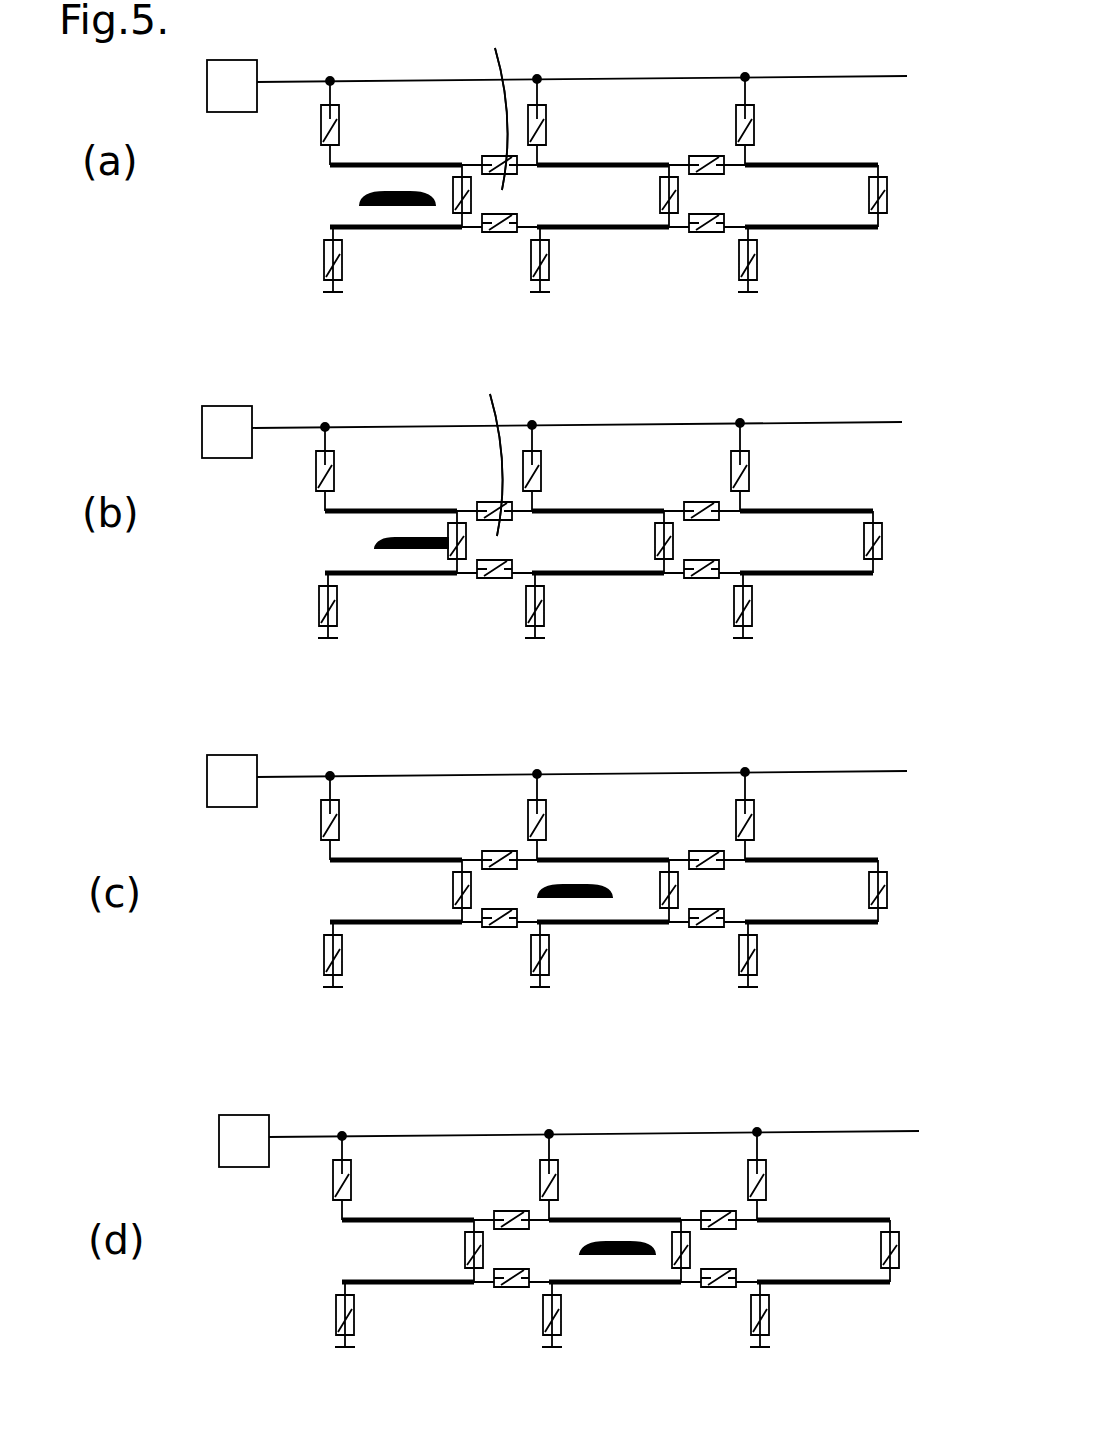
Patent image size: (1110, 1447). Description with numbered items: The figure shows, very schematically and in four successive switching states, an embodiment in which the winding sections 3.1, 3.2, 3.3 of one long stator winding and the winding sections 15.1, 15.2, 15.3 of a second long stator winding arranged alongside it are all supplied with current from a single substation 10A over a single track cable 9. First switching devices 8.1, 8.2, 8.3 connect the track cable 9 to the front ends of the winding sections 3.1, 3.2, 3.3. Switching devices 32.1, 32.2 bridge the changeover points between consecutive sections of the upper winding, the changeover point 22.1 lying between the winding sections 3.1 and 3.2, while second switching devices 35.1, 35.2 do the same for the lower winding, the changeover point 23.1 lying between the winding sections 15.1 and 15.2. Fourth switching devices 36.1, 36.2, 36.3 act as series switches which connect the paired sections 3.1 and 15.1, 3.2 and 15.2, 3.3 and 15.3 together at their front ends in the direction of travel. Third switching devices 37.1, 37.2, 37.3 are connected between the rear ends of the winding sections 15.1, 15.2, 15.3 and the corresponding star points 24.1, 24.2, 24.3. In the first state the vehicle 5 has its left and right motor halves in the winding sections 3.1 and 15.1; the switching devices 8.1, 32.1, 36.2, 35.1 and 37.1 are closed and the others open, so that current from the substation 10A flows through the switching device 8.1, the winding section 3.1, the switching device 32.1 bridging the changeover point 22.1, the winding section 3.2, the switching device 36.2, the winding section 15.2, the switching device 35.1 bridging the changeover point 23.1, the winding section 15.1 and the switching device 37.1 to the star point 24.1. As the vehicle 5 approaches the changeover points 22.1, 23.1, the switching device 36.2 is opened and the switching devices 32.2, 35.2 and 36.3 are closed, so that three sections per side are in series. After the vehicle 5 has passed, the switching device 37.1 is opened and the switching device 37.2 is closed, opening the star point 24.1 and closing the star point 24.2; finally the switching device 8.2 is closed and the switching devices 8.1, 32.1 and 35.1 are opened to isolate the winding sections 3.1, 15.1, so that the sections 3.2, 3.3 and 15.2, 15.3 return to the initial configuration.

The vehicle 5 is at (614, 155).
The track cable 9 is at (270, 81).
The substation 10A is at (225, 98).
The first switching device 8.1 is at (340, 131).
The first switching device 8.2 is at (547, 127).
The first switching device 8.3 is at (755, 127).
The winding section 3.1 is at (337, 172).
The winding section 3.2 is at (647, 165).
The winding section 3.3 is at (797, 168).
The winding section 15.1 is at (373, 224).
The winding section 15.2 is at (630, 222).
The winding section 15.3 is at (837, 222).
The changeover point 22.1 is at (467, 279).
The changeover point 23.1 is at (467, 292).
The star point 24.1 is at (340, 293).
The star point 24.2 is at (547, 293).
The star point 24.3 is at (753, 293).
The switching device 32.1 is at (495, 153).
The switching device 32.2 is at (702, 153).
The second switching device 35.1 is at (498, 236).
The second switching device 35.2 is at (703, 233).
The fourth switching device 36.1 is at (452, 200).
The fourth switching device 36.2 is at (658, 200).
The fourth switching device 36.3 is at (863, 200).
The third switching device 37.1 is at (325, 271).
The third switching device 37.2 is at (530, 271).
The third switching device 37.3 is at (737, 265).